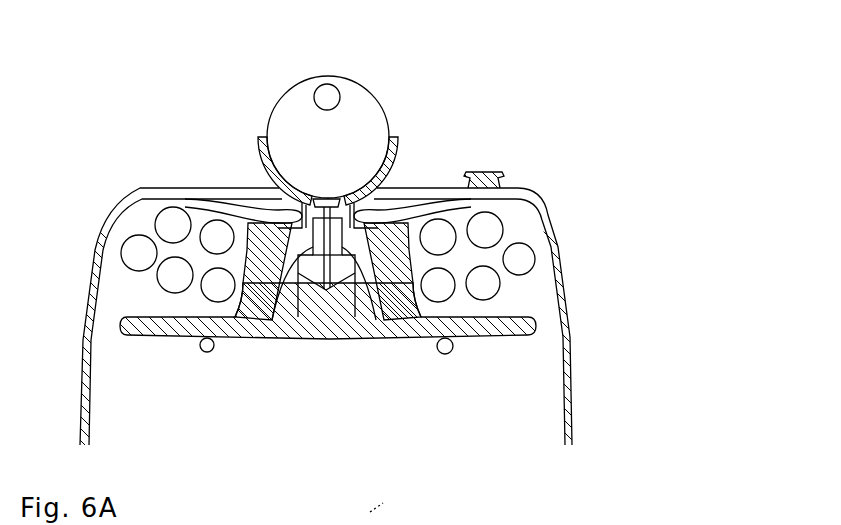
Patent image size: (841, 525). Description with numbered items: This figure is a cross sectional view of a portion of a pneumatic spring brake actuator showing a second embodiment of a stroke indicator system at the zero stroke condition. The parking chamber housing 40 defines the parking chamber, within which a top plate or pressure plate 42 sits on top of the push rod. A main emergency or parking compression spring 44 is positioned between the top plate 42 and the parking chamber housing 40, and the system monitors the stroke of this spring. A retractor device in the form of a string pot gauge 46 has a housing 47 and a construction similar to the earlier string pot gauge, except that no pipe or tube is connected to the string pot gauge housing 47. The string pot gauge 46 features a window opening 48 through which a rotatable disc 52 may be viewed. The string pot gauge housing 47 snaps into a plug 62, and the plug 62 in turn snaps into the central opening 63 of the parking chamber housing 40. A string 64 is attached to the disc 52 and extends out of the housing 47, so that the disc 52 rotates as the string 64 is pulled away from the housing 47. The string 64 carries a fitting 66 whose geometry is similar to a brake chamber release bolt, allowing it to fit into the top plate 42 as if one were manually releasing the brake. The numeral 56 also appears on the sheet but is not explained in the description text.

The parking chamber housing 40 is at (98, 230).
The top plate 42 is at (162, 338).
The parking compression spring 44 is at (160, 188).
The string pot gauge 46 is at (328, 118).
The string pot gauge housing 47 is at (375, 97).
The window opening 48 is at (305, 90).
The rotatable disc 52 is at (333, 76).
The connector 56 is at (389, 502).
The plug 62 is at (395, 163).
The central opening 63 is at (468, 178).
The string 64 is at (268, 317).
The fitting 66 is at (347, 317).